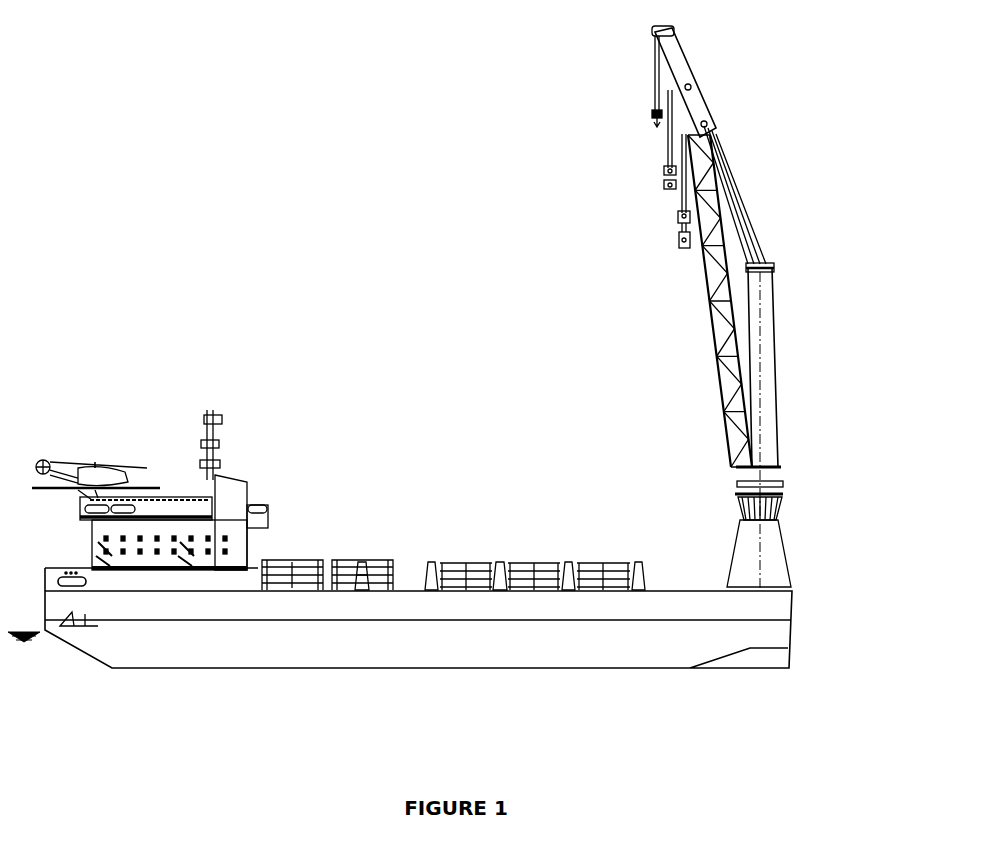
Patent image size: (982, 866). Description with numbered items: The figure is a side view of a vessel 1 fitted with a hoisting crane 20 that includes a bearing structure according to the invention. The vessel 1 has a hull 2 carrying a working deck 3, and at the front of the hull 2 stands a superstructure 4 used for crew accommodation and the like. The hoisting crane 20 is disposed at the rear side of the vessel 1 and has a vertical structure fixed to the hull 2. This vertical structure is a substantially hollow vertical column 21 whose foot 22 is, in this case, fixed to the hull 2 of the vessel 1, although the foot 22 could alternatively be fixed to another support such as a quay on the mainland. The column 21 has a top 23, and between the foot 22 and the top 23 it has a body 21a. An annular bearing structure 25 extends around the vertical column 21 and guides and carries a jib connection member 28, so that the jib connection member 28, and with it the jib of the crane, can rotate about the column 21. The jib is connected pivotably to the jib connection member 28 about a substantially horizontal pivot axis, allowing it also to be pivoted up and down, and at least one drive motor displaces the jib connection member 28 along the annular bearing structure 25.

The vessel 1 is at (457, 386).
The hull 2 is at (360, 668).
The working deck 3 is at (412, 588).
The superstructure 4 is at (262, 458).
The hoisting crane 20 is at (687, 377).
The vertical column 21 is at (758, 308).
The body 21a is at (776, 348).
The foot 22 is at (790, 565).
The top 23 is at (773, 266).
The annular bearing structure 25 is at (715, 496).
The jib connection member 28 is at (790, 486).